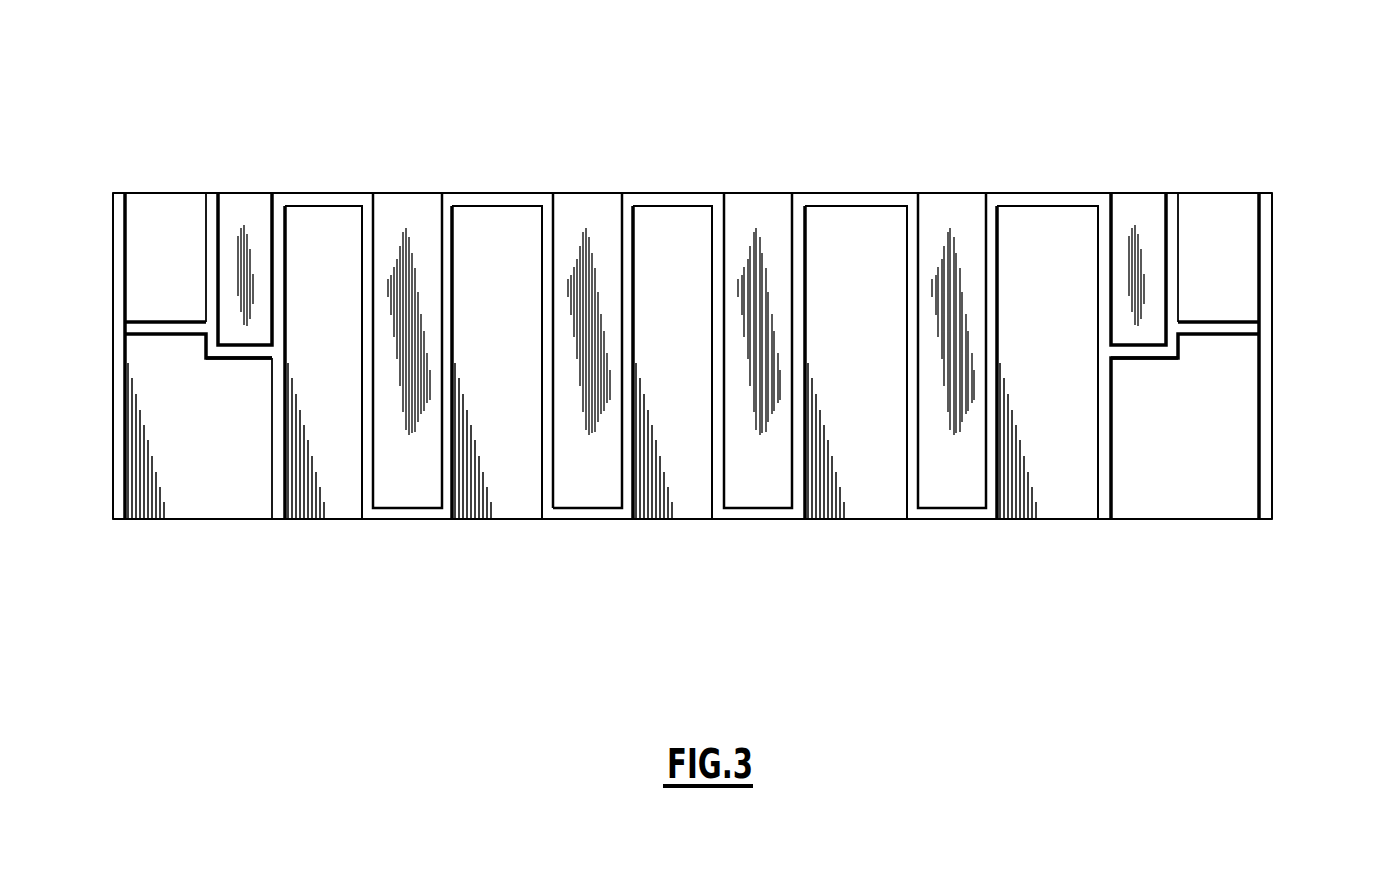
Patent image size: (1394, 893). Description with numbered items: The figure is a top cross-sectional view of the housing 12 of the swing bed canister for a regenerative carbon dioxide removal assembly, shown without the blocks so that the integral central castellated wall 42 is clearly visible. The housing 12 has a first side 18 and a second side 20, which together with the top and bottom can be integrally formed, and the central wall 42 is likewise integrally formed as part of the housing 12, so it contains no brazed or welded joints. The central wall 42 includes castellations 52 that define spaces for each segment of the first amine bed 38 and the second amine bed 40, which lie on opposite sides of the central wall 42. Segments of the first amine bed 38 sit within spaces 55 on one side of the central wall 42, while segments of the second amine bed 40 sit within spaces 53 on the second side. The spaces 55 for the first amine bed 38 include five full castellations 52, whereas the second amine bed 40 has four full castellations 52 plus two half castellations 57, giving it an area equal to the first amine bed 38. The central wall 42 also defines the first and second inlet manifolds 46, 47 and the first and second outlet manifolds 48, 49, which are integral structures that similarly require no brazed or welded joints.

The housing 12 is at (916, 96).
The first side 18 is at (118, 448).
The second side 20 is at (1265, 368).
The first amine bed 38 is at (600, 674).
The second amine bed 40 is at (658, 82).
The central castellated wall 42 is at (553, 440).
The first inlet manifold 46 is at (175, 473).
The second inlet manifold 47 is at (170, 258).
The first outlet manifold 48 is at (1180, 472).
The second outlet manifold 49 is at (1212, 265).
The castellations 52 is at (491, 179).
The spaces 53 is at (241, 213).
The spaces 55 is at (336, 510).
The half castellations 57 is at (233, 378).